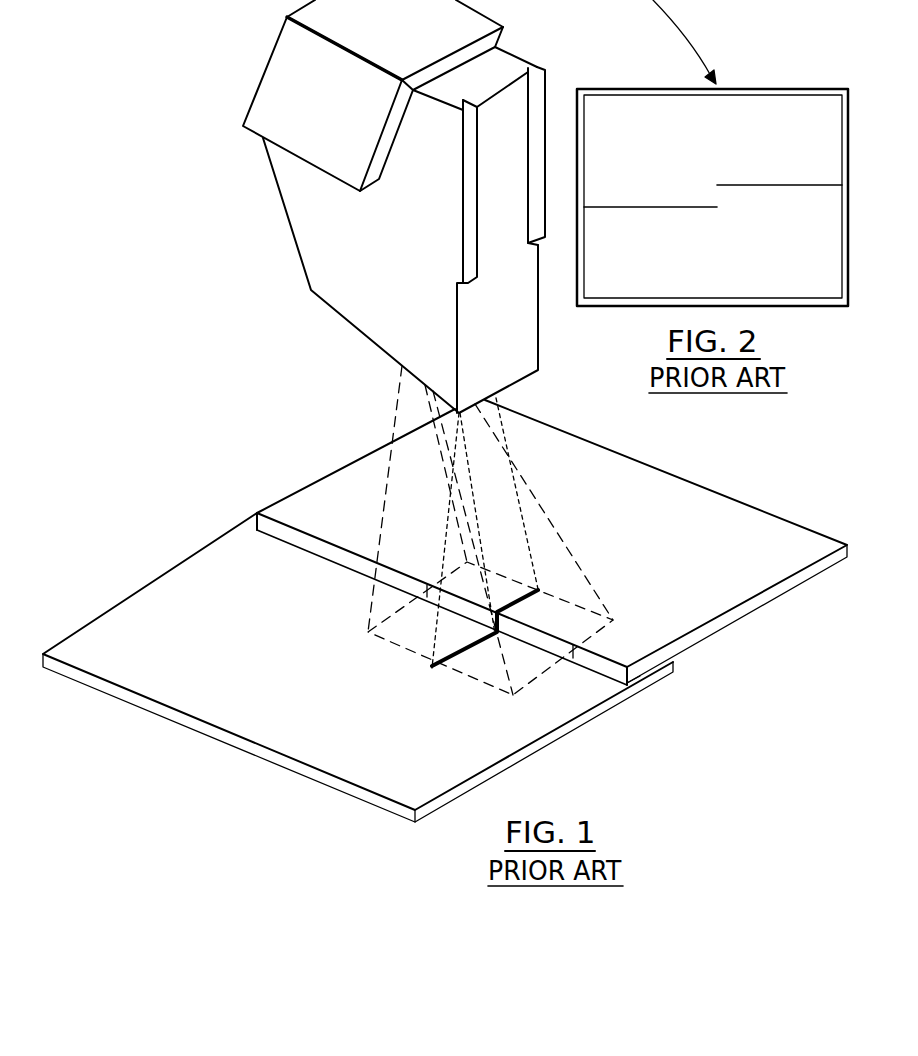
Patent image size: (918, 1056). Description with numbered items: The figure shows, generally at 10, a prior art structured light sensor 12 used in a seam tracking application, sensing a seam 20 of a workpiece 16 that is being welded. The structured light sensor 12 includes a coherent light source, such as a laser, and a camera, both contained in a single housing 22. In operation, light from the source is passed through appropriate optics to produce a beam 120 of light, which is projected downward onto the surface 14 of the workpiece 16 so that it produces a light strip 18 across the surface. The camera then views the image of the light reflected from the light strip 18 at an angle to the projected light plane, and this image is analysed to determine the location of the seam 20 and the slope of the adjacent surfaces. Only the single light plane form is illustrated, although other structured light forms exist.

The laser welding apparatus 10 is at (160, 358).
The laser head body 12 is at (272, 210).
The workpiece plates 14 is at (250, 677).
The joint between plates 16 is at (641, 669).
The weld seam 18 is at (471, 648).
The plate edge / gap 20 is at (272, 540).
The laser head housing 22 is at (262, 54).
The laser beams 120 is at (448, 512).